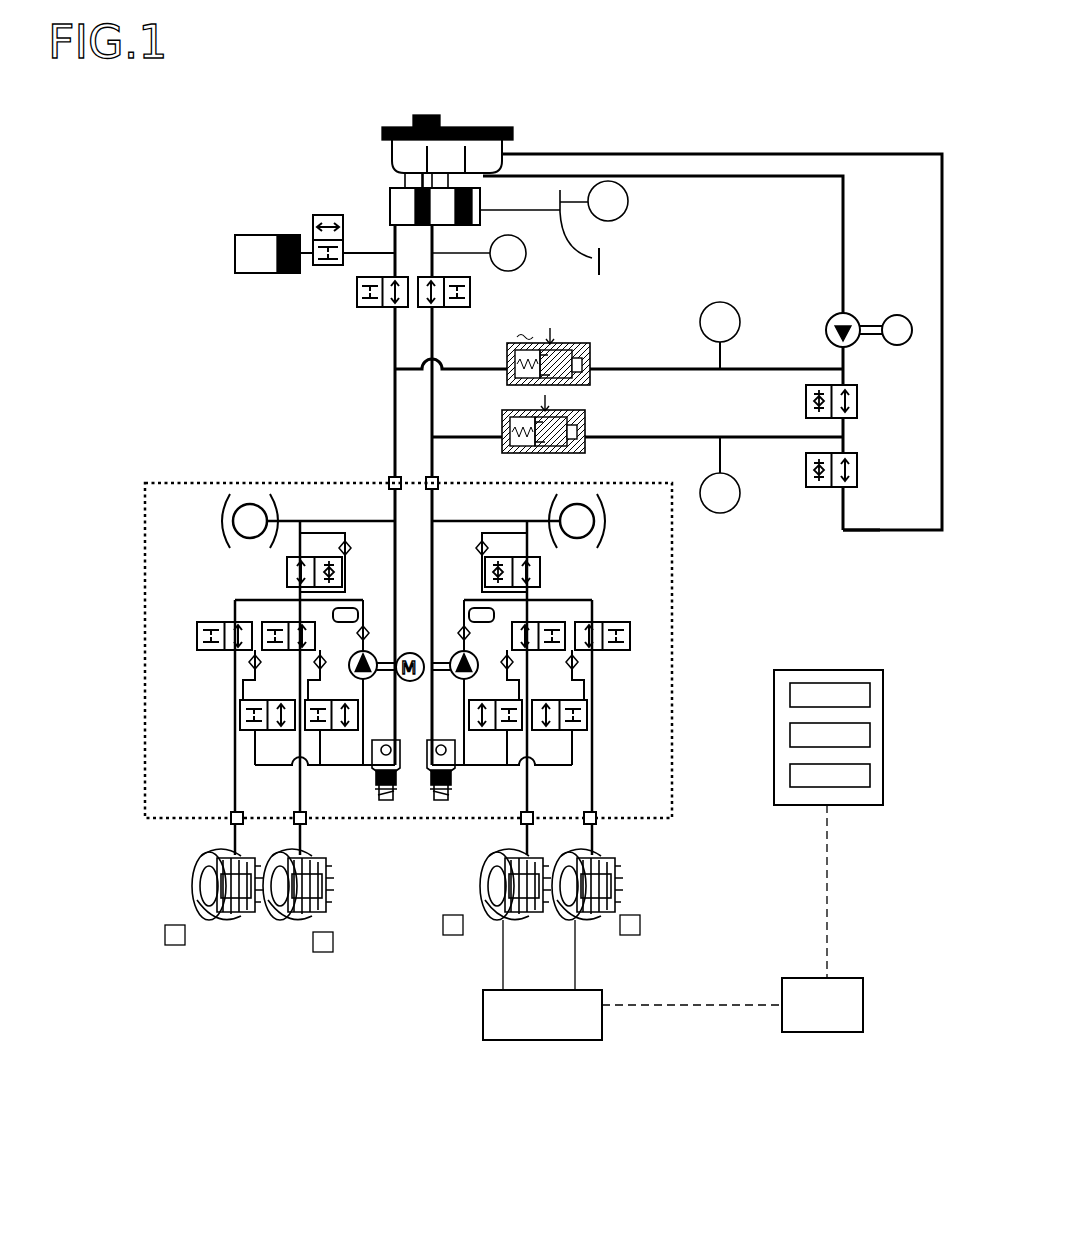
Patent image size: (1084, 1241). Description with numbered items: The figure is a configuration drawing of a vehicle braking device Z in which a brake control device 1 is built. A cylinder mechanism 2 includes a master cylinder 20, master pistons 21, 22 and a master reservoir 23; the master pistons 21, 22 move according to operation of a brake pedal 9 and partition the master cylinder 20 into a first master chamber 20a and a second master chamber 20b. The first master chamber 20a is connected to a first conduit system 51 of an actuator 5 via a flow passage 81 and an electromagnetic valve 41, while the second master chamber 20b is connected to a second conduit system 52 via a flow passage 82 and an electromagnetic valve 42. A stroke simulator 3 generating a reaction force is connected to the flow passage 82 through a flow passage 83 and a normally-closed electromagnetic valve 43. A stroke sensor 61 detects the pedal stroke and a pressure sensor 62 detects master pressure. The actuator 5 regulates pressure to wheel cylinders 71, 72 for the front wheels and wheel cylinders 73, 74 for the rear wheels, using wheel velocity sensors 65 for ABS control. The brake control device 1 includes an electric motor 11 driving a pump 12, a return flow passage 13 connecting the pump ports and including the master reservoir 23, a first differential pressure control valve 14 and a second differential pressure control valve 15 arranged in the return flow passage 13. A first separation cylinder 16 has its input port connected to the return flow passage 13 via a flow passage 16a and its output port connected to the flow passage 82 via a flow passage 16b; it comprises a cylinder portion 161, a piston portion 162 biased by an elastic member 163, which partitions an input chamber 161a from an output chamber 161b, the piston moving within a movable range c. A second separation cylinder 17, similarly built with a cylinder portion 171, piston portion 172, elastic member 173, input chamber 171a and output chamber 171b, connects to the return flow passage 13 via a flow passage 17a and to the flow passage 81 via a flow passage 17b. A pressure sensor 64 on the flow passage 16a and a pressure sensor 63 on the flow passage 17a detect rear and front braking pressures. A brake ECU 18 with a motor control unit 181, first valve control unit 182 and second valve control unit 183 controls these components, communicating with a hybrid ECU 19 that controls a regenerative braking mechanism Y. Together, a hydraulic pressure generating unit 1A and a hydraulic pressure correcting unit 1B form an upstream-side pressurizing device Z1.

The brake control device 1 is at (718, 138).
The hydraulic pressure generating unit 1A is at (800, 238).
The hydraulic pressure correcting unit 1B is at (849, 552).
The cylinder mechanism 2 is at (396, 196).
The stroke simulator 3 is at (240, 273).
The actuator 5 is at (283, 480).
The brake pedal 9 is at (605, 268).
The electric motor 11 is at (893, 312).
The pump 12 is at (833, 318).
The return flow passage 13 is at (847, 236).
The first differential pressure control valve 14 is at (860, 400).
The second differential pressure control valve 15 is at (860, 470).
The first separation cylinder 16 is at (584, 345).
The flow passage 16a is at (753, 369).
The flow passage 16b is at (413, 367).
The second separation cylinder 17 is at (567, 432).
The flow passage 17a is at (693, 436).
The flow passage 17b is at (423, 433).
The brake ECU 18 is at (794, 737).
The hybrid ECU 19 is at (866, 1000).
The master cylinder 20 is at (415, 195).
The first master chamber 20a is at (440, 215).
The second master chamber 20b is at (373, 251).
The master piston 21 is at (485, 205).
The master piston 22 is at (397, 215).
The master reservoir 23 is at (397, 160).
The electromagnetic valve 41 is at (470, 292).
The electromagnetic valve 42 is at (357, 292).
The electromagnetic valve 43 is at (313, 225).
The first conduit system 51 is at (585, 573).
The second conduit system 52 is at (228, 572).
The stroke sensor 61 is at (630, 212).
The pressure sensor 62 is at (525, 262).
The pressure sensor 63 is at (742, 495).
The pressure sensor 64 is at (718, 302).
The wheel velocity sensor 65 is at (172, 945).
The wheel cylinder 71 is at (600, 857).
The wheel cylinder 72 is at (495, 858).
The wheel cylinder 73 is at (312, 905).
The wheel cylinder 74 is at (245, 905).
The flow passage 81 is at (430, 468).
The flow passage 82 is at (392, 468).
The flow passage 83 is at (357, 255).
The cylinder portion 161 is at (563, 341).
The input chamber 161a is at (593, 367).
The output chamber 161b is at (525, 372).
The piston portion 162 is at (567, 340).
The elastic member 163 is at (512, 362).
The cylinder portion 171 is at (575, 410).
The input chamber 171a is at (585, 433).
The output chamber 171b is at (527, 445).
The piston portion 172 is at (580, 450).
The elastic member 173 is at (522, 440).
The motor control unit 181 is at (800, 698).
The first valve control unit 182 is at (800, 738).
The second valve control unit 183 is at (805, 782).
The vehicle braking device Z is at (197, 167).
The upstream-side pressurizing device Z1 is at (250, 370).
The regenerative braking mechanism Y is at (483, 1020).
The movable range c is at (515, 342).